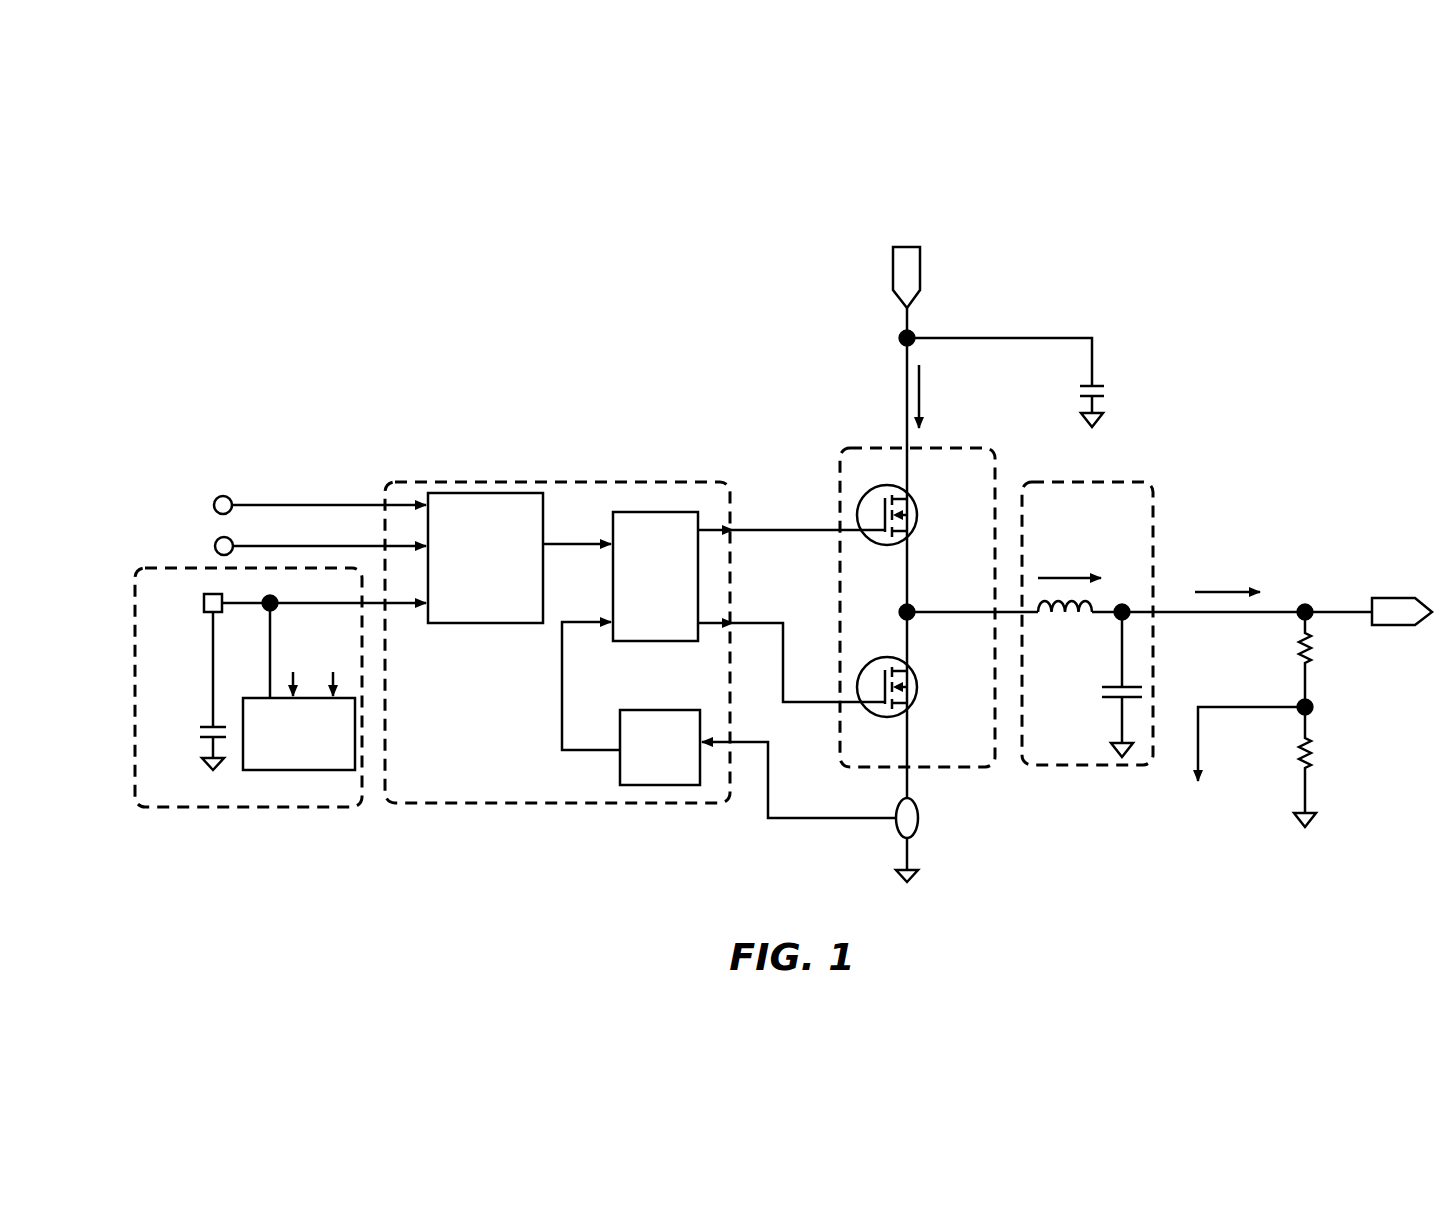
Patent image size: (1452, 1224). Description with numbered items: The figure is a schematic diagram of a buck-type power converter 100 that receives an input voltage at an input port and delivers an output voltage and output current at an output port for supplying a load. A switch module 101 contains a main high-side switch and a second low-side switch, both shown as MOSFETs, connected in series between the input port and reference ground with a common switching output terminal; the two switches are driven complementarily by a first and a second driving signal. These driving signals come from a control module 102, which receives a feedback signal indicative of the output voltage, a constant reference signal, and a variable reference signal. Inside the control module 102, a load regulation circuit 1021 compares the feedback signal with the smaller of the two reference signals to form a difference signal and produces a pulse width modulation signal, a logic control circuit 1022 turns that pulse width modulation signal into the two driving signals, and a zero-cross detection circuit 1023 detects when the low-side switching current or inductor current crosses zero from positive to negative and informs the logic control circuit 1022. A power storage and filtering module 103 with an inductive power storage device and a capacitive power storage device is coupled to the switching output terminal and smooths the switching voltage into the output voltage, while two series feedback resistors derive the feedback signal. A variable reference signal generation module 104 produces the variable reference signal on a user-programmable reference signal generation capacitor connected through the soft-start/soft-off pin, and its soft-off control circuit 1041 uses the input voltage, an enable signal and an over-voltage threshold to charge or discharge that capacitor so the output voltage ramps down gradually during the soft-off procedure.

The power converter 100 is at (249, 256).
The switch module 101 is at (835, 484).
The control module 102 is at (557, 642).
The load regulation circuit 1021 is at (485, 555).
The logic control circuit 1022 is at (655, 576).
The zero-cross detection circuit 1023 is at (660, 747).
The power storage and filtering module 103 is at (1087, 623).
The variable reference signal generation module 104 is at (262, 808).
The soft-off control circuit 1041 is at (272, 770).